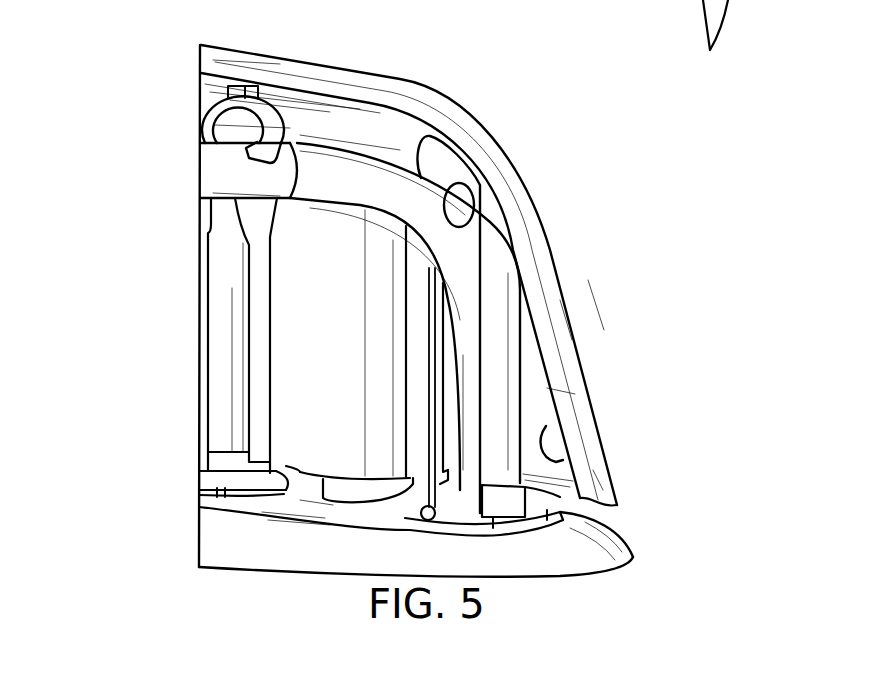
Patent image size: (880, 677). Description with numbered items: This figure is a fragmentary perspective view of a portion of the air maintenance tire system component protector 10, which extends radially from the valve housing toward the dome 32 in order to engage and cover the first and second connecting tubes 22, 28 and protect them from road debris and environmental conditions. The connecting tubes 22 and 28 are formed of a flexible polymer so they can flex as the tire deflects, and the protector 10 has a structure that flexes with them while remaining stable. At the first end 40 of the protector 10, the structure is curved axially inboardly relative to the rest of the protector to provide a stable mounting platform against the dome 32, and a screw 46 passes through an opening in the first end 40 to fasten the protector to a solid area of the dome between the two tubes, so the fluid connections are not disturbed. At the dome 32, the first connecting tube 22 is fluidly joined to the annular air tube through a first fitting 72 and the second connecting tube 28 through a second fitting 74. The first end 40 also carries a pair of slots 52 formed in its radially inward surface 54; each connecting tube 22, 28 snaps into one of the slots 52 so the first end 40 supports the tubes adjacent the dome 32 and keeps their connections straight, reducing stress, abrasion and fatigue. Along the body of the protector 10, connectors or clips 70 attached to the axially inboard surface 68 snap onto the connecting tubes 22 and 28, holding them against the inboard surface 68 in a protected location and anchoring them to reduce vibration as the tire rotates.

The air maintenance tire system component protector 10 is at (500, 103).
The first connecting tube 22 is at (422, 176).
The second connecting tube 28 is at (199, 232).
The dome 32 is at (617, 533).
The first end 40 is at (565, 322).
The screw 46 is at (340, 487).
The slots 52 is at (475, 224).
The radially inward surface 54 is at (563, 460).
The axially inboard surface 68 is at (303, 102).
The connectors or clips 70 is at (210, 110).
The first fitting 72 is at (460, 510).
The second fitting 74 is at (220, 490).